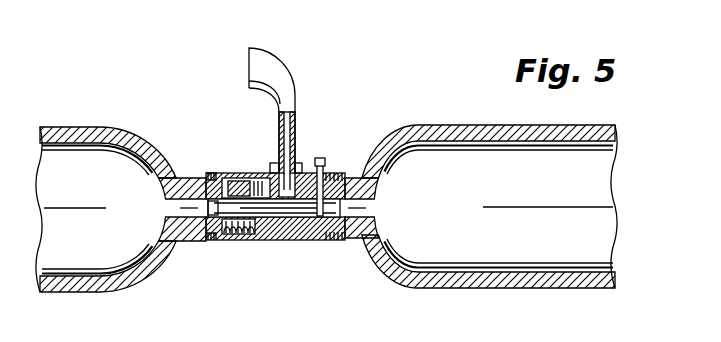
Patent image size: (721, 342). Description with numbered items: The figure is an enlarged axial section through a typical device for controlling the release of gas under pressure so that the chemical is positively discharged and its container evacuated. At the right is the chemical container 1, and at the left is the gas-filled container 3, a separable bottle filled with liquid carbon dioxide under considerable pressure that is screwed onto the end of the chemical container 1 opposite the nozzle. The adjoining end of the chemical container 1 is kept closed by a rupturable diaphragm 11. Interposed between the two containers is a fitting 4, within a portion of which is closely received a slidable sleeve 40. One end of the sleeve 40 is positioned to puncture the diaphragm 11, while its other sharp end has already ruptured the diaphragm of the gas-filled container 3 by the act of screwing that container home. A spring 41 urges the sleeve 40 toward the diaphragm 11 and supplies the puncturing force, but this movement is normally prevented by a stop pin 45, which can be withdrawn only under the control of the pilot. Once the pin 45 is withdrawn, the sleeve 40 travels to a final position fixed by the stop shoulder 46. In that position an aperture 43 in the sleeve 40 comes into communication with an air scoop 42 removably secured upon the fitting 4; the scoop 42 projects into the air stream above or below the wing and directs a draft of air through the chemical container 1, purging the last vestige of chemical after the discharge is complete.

The chemical container 1 is at (549, 283).
The gas-filled container 3 is at (63, 287).
The fitting 4 is at (263, 240).
The rupturable diaphragm 11 is at (368, 188).
The sleeve 40 is at (275, 228).
The spring 41 is at (243, 180).
The air scoop 42 is at (263, 65).
The aperture 43 is at (263, 175).
The stop pin 45 is at (315, 166).
The stop shoulder 46 is at (252, 226).